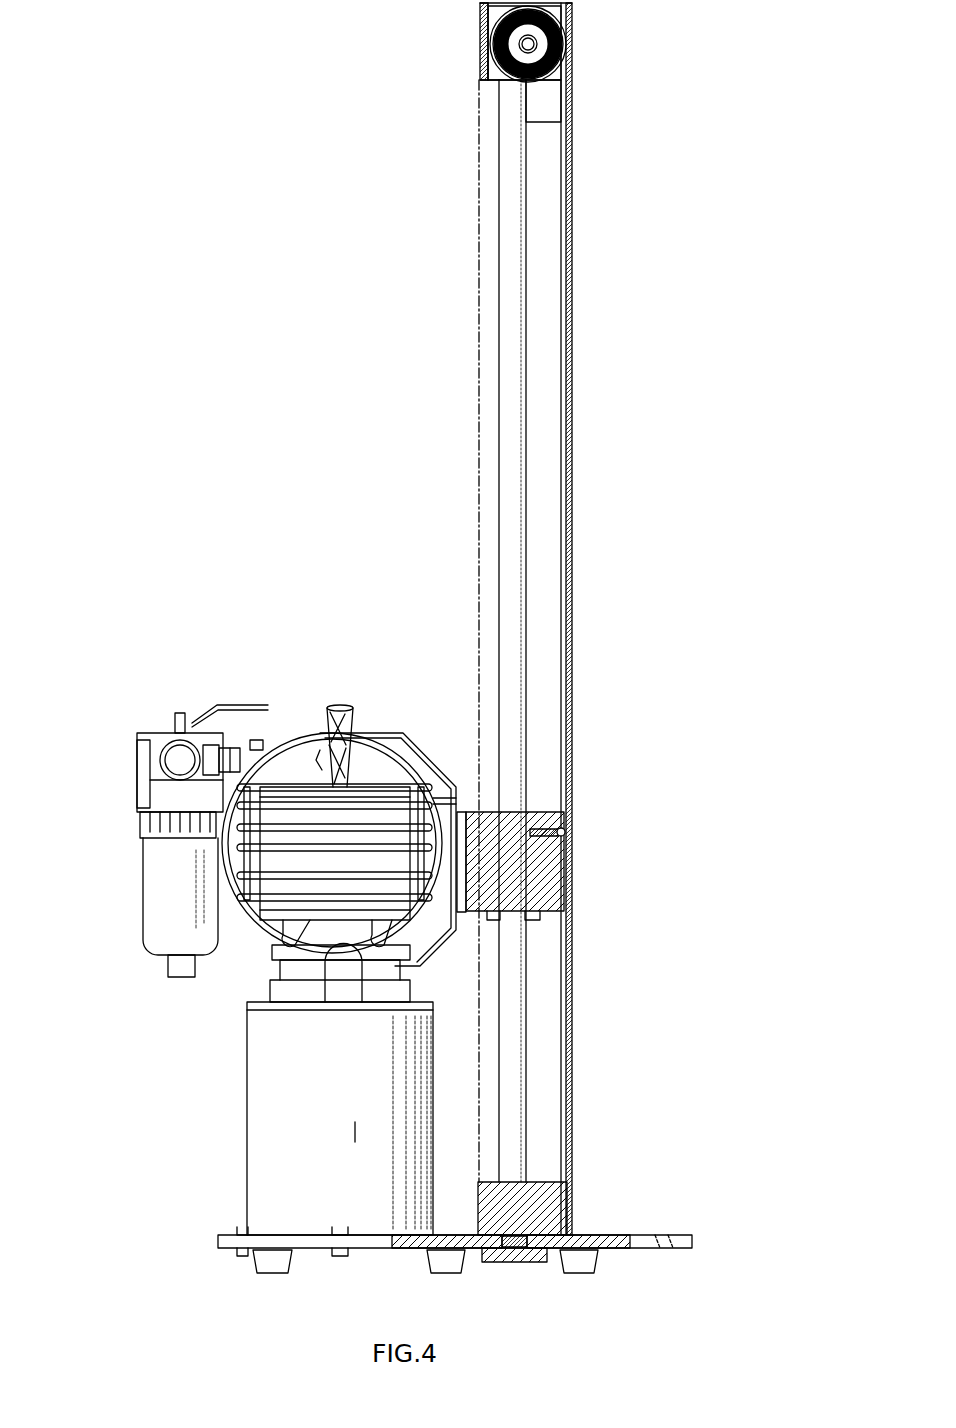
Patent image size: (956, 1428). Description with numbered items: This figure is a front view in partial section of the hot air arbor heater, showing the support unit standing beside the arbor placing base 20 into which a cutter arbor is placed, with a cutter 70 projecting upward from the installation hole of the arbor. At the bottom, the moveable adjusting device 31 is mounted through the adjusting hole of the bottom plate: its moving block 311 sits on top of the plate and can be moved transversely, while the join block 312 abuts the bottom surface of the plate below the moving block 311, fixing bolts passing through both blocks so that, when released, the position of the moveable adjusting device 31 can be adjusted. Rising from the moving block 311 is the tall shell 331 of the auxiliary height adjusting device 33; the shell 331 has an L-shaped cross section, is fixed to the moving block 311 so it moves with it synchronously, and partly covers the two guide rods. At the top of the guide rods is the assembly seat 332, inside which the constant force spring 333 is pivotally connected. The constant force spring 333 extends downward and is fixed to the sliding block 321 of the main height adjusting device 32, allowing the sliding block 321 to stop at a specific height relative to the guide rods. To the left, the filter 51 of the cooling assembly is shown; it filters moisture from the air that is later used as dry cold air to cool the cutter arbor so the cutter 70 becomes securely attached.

The arbor placing base 20 is at (255, 1125).
The moveable adjusting device 31 is at (455, 1228).
The moving block 311 is at (543, 1190).
The join block 312 is at (522, 1262).
The main height adjusting device 32 is at (562, 882).
The sliding block 321 is at (548, 893).
The auxiliary height adjusting device 33 is at (522, 45).
The shell 331 is at (572, 462).
The assembly seat 332 is at (488, 50).
The constant force spring 333 is at (562, 45).
The filter 51 is at (152, 900).
The cutter 70 is at (343, 706).